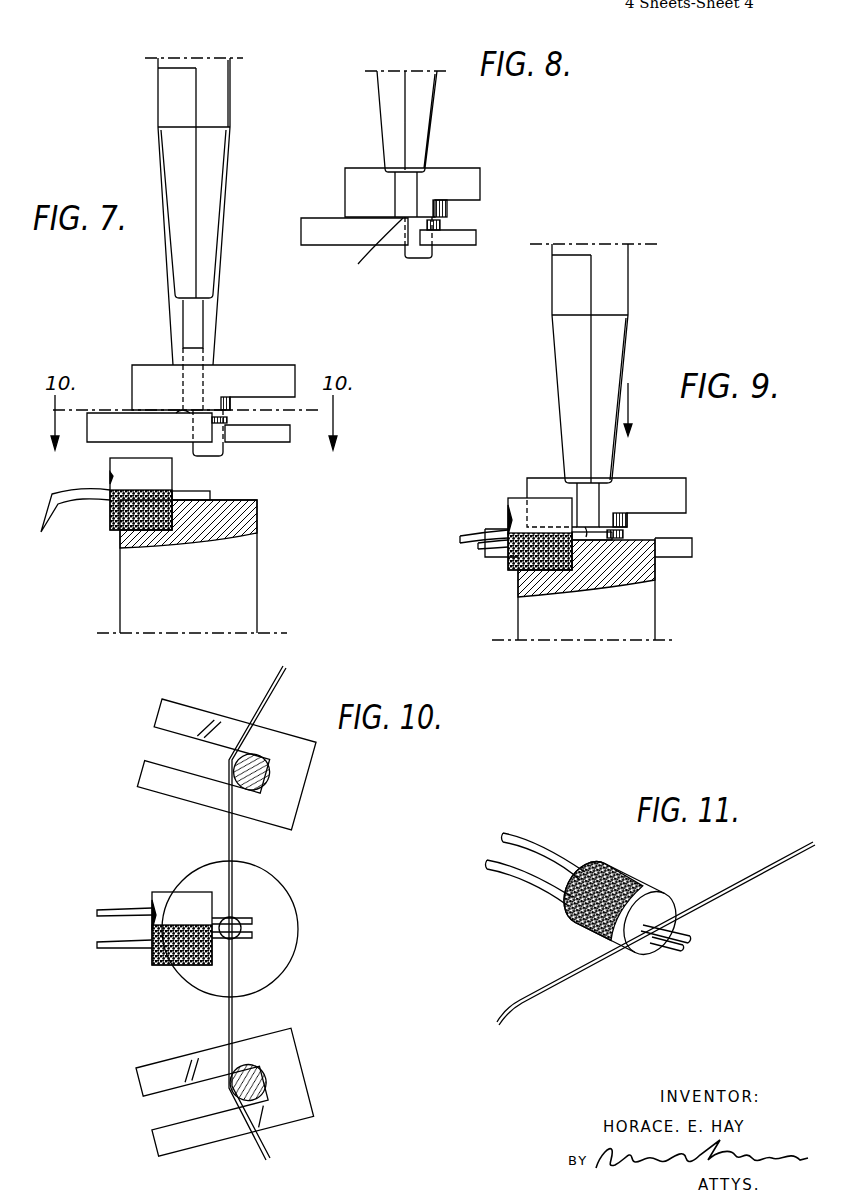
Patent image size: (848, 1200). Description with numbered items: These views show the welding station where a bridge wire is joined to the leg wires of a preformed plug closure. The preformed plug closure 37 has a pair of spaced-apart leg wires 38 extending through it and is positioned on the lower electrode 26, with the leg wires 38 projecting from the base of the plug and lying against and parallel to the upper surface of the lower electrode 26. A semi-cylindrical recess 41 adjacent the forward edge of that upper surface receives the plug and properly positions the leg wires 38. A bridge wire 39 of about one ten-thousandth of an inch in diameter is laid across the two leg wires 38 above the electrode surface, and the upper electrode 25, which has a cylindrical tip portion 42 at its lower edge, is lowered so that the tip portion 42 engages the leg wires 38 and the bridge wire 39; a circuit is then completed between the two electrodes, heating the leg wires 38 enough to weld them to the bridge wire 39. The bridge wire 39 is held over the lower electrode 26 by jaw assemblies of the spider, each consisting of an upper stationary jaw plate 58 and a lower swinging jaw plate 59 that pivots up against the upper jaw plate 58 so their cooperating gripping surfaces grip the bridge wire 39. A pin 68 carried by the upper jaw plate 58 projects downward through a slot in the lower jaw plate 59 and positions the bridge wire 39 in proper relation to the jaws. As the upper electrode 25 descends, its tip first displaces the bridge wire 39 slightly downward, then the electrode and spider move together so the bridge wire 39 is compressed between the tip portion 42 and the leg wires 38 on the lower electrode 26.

In FIG. 7, the upper electrode 25 is at (220, 97).
In FIG. 8, the upper electrode 25 is at (425, 104).
In FIG. 9, the upper electrode 25 is at (620, 290).
In FIG. 7, the lower electrode 26 is at (208, 590).
In FIG. 9, the lower electrode 26 is at (650, 608).
In FIG. 10, the lower electrode 26 is at (290, 902).
In FIG. 7, the preformed plug closure 37 is at (154, 488).
In FIG. 9, the preformed plug closure 37 is at (512, 565).
In FIG. 10, the preformed plug closure 37 is at (168, 895).
In FIG. 11, the preformed plug closure 37 is at (627, 878).
In FIG. 7, the leg wires 38 is at (236, 481).
In FIG. 9, the leg wires 38 is at (475, 548).
In FIG. 10, the leg wires 38 is at (100, 945).
In FIG. 11, the leg wires 38 is at (488, 862).
In FIG. 7, the bridge wire 39 is at (180, 412).
In FIG. 8, the bridge wire 39 is at (374, 254).
In FIG. 9, the bridge wire 39 is at (588, 530).
In FIG. 10, the bridge wire 39 is at (228, 826).
In FIG. 11, the bridge wire 39 is at (678, 920).
In FIG. 7, the semi-cylindrical recess 41 is at (128, 536).
In FIG. 9, the semi-cylindrical recess 41 is at (533, 578).
In FIG. 10, the semi-cylindrical recess 41 is at (185, 965).
In FIG. 7, the cylindrical tip portion 42 is at (198, 313).
In FIG. 8, the cylindrical tip portion 42 is at (410, 186).
In FIG. 9, the cylindrical tip portion 42 is at (600, 493).
In FIG. 10, the cylindrical tip portion 42 is at (233, 915).
In FIG. 7, the upper stationary jaw plate 58 is at (132, 372).
In FIG. 8, the upper stationary jaw plate 58 is at (352, 168).
In FIG. 9, the upper stationary jaw plate 58 is at (533, 478).
In FIG. 7, the lower swinging jaw plate 59 is at (103, 433).
In FIG. 8, the lower swinging jaw plate 59 is at (313, 222).
In FIG. 9, the lower swinging jaw plate 59 is at (690, 548).
In FIG. 10, the lower swinging jaw plate 59 is at (188, 712).
In FIG. 7, the pin 68 is at (212, 457).
In FIG. 8, the pin 68 is at (425, 258).
In FIG. 10, the pin 68 is at (285, 797).